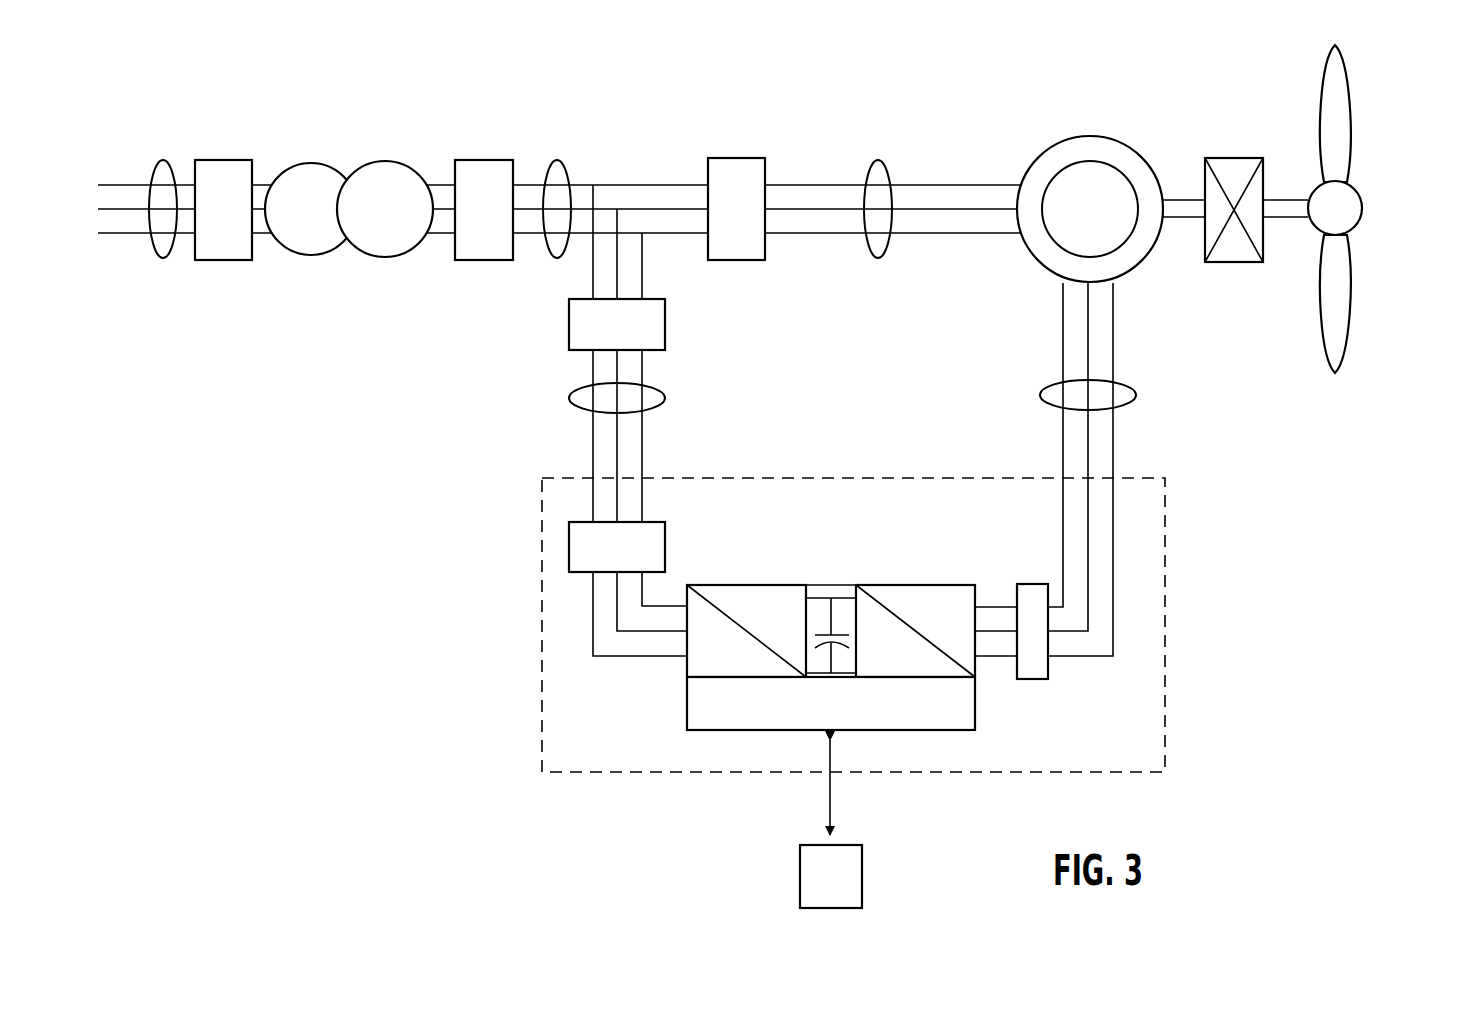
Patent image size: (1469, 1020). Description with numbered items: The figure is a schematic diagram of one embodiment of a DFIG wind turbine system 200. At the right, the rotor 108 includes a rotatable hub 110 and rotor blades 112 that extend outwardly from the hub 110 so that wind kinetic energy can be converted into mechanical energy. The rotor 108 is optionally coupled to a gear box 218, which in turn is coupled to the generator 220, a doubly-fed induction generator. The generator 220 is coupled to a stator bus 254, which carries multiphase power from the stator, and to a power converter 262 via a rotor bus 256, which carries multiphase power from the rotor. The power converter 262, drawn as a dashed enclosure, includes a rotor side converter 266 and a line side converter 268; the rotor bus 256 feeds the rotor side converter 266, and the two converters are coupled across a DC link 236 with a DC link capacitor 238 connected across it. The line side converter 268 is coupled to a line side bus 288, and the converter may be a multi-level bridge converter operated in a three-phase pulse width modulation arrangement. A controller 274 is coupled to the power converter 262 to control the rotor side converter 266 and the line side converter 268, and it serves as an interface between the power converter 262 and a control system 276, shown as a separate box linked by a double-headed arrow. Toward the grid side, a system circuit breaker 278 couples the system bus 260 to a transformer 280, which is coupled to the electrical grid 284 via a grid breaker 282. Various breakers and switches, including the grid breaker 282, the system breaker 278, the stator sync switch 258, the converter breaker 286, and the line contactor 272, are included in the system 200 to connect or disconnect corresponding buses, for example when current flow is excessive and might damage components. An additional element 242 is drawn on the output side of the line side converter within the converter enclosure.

The rotor 108 is at (1408, 92).
The rotatable hub 110 is at (1362, 213).
The rotor blade 112 is at (1350, 167).
The wind turbine system 200 is at (393, 598).
The gear box 218 is at (1225, 158).
The generator 220 is at (1100, 136).
The DC link 236 is at (862, 593).
The DC link capacitor 238 is at (820, 630).
The line contactor 242 is at (1052, 665).
The stator bus 254 is at (878, 160).
The rotor bus 256 is at (1135, 395).
The stator sync switch 258 is at (727, 158).
The system bus 260 is at (558, 160).
The power converter 262 is at (1165, 592).
The rotor side converter 266 is at (980, 668).
The line side converter 268 is at (680, 668).
The line contactor 272 is at (569, 555).
The controller 274 is at (730, 730).
The control system 276 is at (862, 872).
The system circuit breaker 278 is at (480, 160).
The transformer 280 is at (382, 161).
The grid breaker 282 is at (222, 160).
The electrical grid 284 is at (162, 160).
The converter breaker 286 is at (569, 330).
The line side bus 288 is at (569, 398).